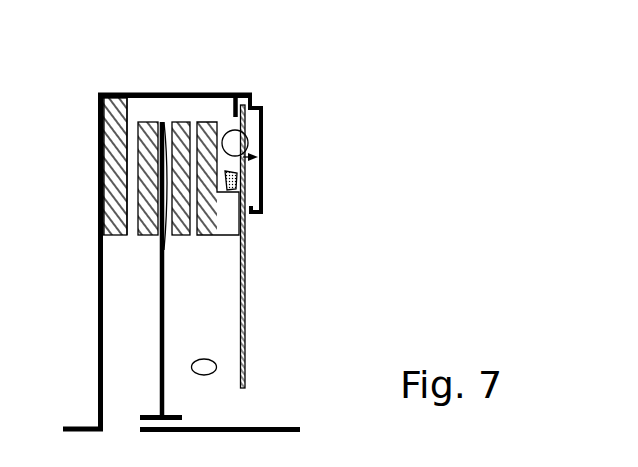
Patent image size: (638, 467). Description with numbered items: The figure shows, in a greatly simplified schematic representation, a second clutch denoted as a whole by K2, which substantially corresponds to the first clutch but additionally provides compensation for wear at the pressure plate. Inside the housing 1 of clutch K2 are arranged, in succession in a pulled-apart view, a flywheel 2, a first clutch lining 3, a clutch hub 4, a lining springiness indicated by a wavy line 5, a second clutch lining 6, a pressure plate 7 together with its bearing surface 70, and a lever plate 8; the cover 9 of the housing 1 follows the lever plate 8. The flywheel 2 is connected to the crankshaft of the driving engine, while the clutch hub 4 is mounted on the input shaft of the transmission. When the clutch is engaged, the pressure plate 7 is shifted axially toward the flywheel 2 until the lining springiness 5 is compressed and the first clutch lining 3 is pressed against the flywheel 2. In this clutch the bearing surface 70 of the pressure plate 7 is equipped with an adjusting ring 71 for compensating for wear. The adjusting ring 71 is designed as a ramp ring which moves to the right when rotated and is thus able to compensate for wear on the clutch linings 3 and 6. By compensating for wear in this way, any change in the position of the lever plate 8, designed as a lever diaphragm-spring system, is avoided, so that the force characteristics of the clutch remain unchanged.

The clutch K2 is at (259, 63).
The housing 1 is at (102, 283).
The flywheel 2 is at (112, 187).
The first clutch lining 3 is at (150, 170).
The clutch hub 4 is at (159, 328).
The lining springiness 5 is at (102, 121).
The second clutch lining 6 is at (183, 237).
The pressure plate 7 is at (239, 234).
The lever plate 8 is at (247, 297).
The cover 9 is at (265, 128).
The bearing surface 70 is at (263, 199).
The adjusting ring 71 is at (216, 154).